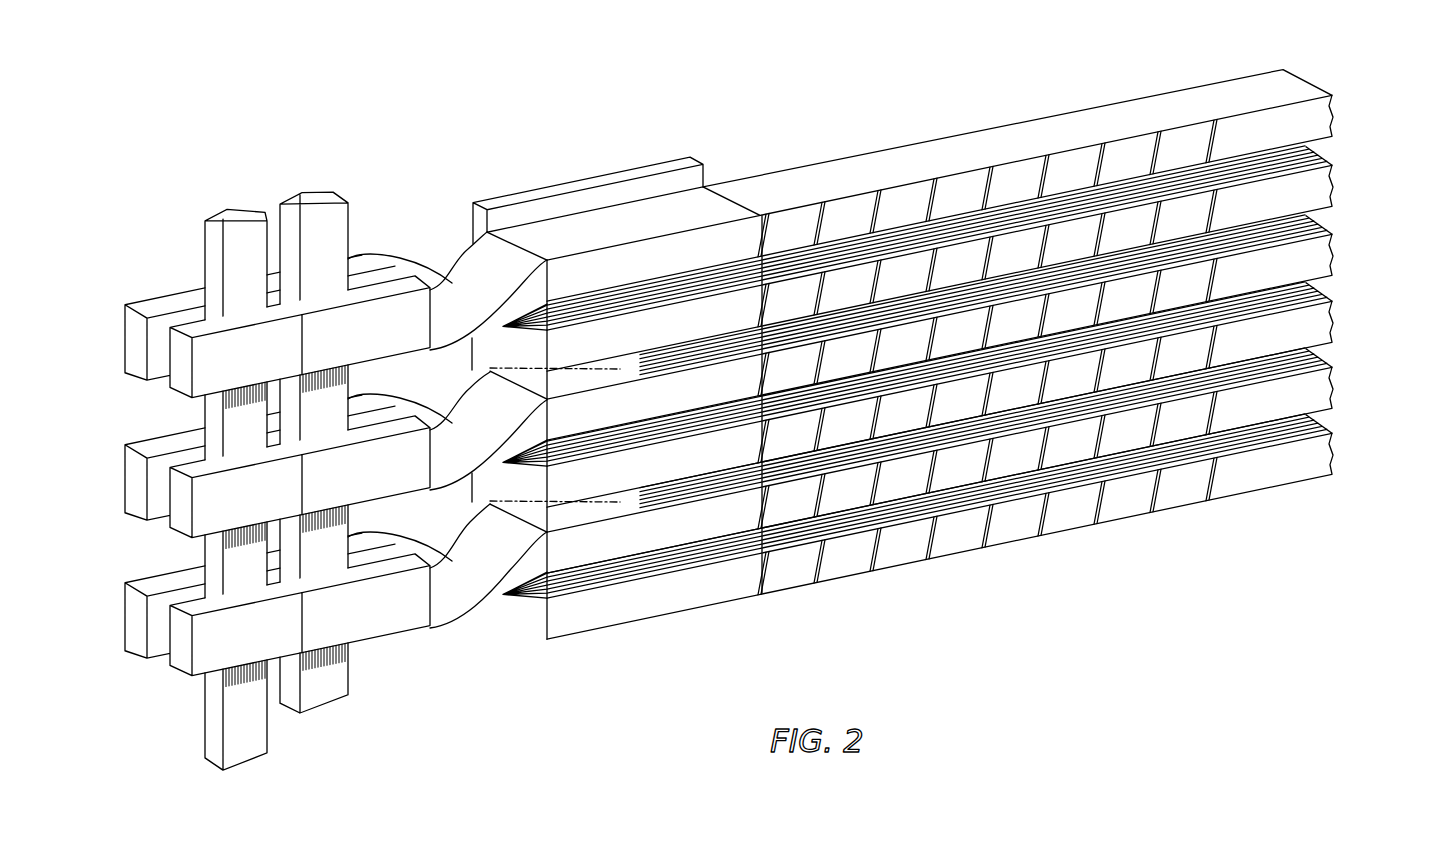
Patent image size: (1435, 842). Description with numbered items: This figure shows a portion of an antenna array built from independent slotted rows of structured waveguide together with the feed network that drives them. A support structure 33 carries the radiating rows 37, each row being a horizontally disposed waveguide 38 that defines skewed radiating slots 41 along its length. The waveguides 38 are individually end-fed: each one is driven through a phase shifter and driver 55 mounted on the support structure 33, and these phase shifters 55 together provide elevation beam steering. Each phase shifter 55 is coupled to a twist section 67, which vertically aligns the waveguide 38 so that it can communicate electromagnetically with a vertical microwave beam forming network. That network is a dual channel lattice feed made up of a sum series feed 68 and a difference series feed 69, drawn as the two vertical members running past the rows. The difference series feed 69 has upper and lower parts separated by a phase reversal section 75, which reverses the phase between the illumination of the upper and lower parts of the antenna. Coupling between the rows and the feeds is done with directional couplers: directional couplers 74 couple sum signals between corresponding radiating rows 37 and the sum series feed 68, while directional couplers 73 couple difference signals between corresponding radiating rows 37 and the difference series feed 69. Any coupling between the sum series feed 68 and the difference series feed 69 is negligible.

The support structure 33 is at (646, 176).
The radiating rows 37 is at (1332, 157).
The waveguides 38 is at (1012, 129).
The skewed radiating slots 41 is at (930, 196).
The phase shifter and driver 55 is at (641, 269).
The twist section 67 is at (472, 257).
The sum series feed 68 is at (349, 224).
The difference series feed 69 is at (212, 254).
The directional couplers 73 is at (237, 362).
The directional couplers 74 is at (359, 334).
The phase reversal section 75 is at (242, 692).